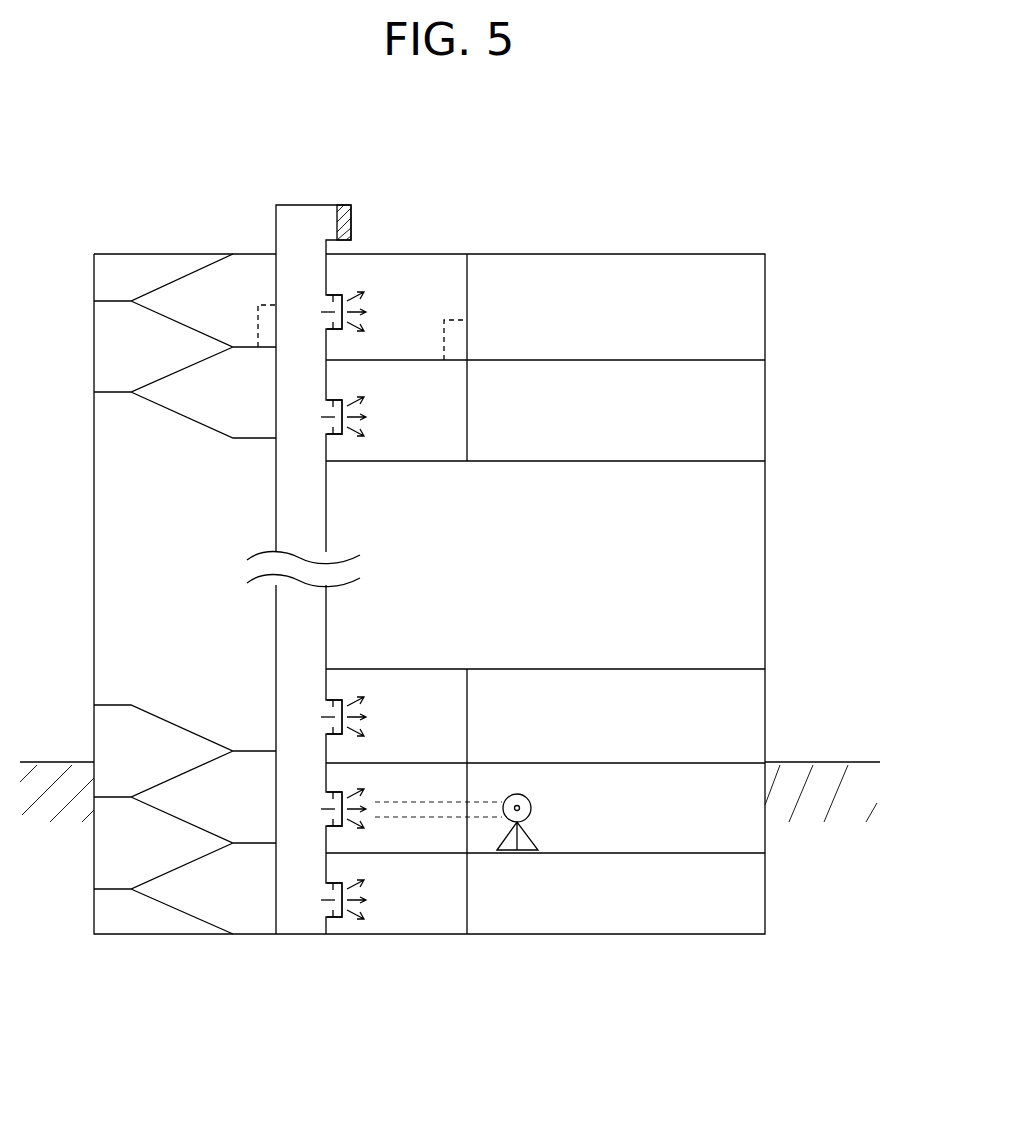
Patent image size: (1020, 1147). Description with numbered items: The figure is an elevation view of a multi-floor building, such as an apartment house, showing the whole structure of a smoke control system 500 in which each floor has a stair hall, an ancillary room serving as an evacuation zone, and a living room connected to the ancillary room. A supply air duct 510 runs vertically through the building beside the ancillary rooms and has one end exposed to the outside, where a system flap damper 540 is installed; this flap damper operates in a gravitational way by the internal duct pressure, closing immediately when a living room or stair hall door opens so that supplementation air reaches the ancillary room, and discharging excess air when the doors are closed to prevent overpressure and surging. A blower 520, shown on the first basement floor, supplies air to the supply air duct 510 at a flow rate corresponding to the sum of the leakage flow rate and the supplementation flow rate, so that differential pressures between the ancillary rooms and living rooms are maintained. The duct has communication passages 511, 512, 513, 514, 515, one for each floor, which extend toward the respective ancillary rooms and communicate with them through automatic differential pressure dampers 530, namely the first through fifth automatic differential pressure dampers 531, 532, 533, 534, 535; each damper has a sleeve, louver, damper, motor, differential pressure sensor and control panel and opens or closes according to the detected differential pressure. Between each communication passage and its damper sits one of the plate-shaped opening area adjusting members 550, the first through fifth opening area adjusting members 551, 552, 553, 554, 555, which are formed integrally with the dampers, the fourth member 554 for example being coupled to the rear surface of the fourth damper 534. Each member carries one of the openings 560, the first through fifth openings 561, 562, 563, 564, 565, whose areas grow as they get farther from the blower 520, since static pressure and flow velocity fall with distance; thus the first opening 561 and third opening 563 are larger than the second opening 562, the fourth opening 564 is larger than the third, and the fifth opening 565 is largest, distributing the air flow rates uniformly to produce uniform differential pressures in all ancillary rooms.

The smoke control system 500 is at (720, 138).
The supply air duct 510 is at (272, 903).
The first communication passage 511 is at (327, 892).
The second communication passage 512 is at (327, 801).
The third communication passage 513 is at (327, 709).
The fourth communication passage 514 is at (327, 409).
The fifth communication passage 515 is at (327, 304).
The blower 520 is at (528, 849).
The automatic differential pressure dampers 530 is at (326, 1012).
The first automatic differential pressure damper 531 is at (345, 917).
The second automatic differential pressure damper 532 is at (345, 826).
The third automatic differential pressure damper 533 is at (348, 703).
The fourth automatic differential pressure damper 534 is at (347, 432).
The fifth automatic differential pressure damper 535 is at (350, 297).
The system flap damper 540 is at (346, 205).
The opening area adjusting members 550 is at (133, 1012).
The first opening area adjusting member 551 is at (350, 884).
The second opening area adjusting member 552 is at (350, 793).
The third opening area adjusting member 553 is at (348, 735).
The fourth opening area adjusting member 554 is at (348, 400).
The fifth opening area adjusting member 555 is at (337, 325).
The openings 560 is at (523, 1012).
The first opening 561 is at (328, 908).
The second opening 562 is at (327, 817).
The third opening 563 is at (327, 725).
The fourth opening 564 is at (327, 425).
The fifth opening 565 is at (327, 320).